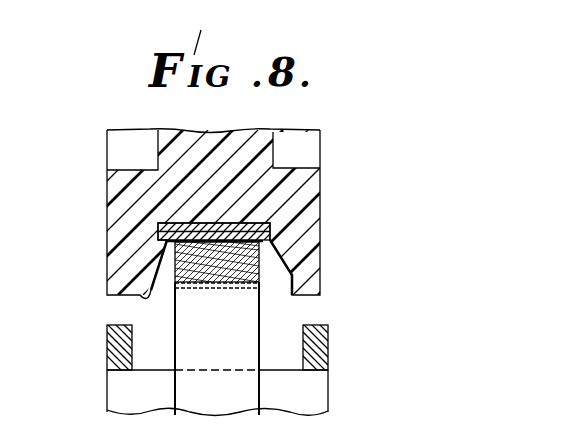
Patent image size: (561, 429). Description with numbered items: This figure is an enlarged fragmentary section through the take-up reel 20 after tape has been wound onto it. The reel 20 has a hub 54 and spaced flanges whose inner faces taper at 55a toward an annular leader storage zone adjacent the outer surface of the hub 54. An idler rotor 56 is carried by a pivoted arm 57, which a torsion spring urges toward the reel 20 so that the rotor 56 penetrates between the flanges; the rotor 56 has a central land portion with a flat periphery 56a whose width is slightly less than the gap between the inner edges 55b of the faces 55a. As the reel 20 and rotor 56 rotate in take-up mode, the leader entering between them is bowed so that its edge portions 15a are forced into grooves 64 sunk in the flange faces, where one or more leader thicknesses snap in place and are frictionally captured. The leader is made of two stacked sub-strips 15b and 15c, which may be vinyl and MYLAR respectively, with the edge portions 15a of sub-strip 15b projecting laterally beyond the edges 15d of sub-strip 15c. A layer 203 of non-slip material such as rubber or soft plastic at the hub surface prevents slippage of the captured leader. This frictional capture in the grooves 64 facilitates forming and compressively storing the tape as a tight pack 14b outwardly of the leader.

The take-up reel 20 is at (317, 120).
The hub 54 is at (320, 137).
The leader edge portions 15a is at (270, 233).
The first sub-strip 15b is at (178, 223).
The second sub-strip 15c is at (202, 240).
The sub-strip edges 15d is at (164, 240).
The layer of non-slip material 203 is at (239, 223).
The inner edges of faces 55b is at (175, 268).
The tapered faces 55a is at (143, 302).
The grooves 64 is at (294, 265).
The tape pack 14b is at (263, 245).
The idler rotor 56 is at (183, 386).
The flat periphery 56a is at (232, 326).
The arm 57 is at (118, 344).